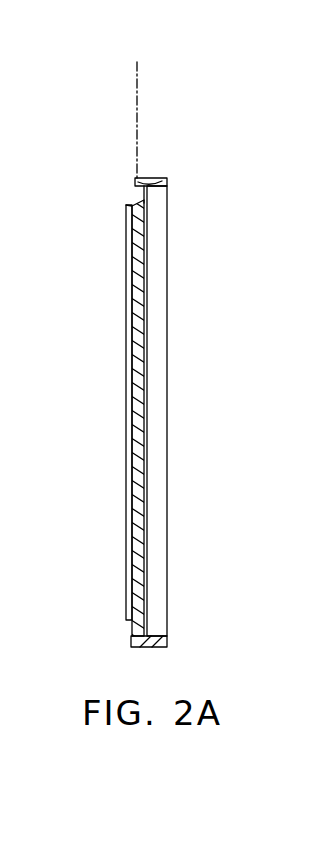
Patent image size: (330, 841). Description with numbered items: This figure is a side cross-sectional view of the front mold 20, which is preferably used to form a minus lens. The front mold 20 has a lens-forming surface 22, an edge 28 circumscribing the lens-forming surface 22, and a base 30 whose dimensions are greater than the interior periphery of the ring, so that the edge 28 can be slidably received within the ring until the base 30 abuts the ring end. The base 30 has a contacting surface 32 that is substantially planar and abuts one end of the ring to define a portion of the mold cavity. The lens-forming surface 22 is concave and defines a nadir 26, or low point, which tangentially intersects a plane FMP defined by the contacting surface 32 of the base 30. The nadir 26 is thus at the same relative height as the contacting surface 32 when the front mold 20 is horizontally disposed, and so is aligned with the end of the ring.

The plane FMP is at (143, 76).
The front mold 20 is at (167, 295).
The lens-forming surface 22 is at (125, 567).
The nadir 26 is at (138, 411).
The edge 28 is at (130, 198).
The base 30 is at (152, 183).
The contacting surface 32 is at (132, 635).